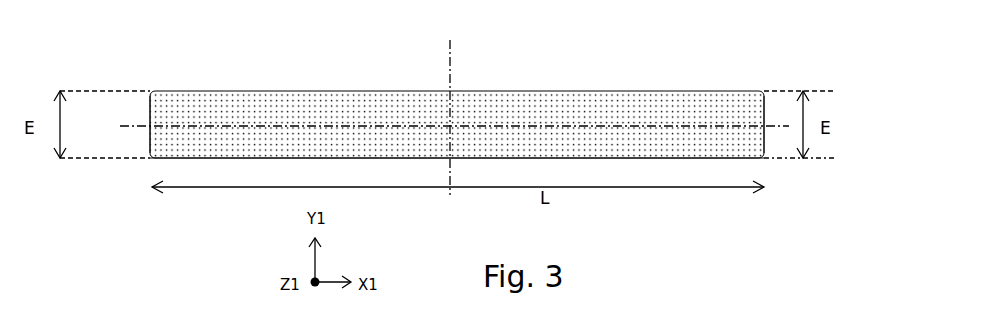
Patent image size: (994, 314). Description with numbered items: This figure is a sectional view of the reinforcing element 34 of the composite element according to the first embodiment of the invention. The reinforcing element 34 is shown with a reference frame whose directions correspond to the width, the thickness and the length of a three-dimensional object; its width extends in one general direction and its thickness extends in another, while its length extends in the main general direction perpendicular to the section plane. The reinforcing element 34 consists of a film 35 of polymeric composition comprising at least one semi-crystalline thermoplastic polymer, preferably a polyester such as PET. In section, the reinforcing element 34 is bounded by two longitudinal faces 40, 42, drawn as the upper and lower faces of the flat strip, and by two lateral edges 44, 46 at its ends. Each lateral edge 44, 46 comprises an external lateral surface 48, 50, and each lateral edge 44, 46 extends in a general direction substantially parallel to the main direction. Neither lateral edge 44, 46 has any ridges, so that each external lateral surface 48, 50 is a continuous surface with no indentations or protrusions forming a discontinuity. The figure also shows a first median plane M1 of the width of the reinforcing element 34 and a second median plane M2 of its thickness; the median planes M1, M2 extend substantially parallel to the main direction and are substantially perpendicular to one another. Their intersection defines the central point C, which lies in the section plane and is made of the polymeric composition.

The reinforcing element 34 is at (387, 74).
The film 35 is at (285, 126).
The longitudinal face 40 is at (591, 96).
The longitudinal face 42 is at (622, 160).
The lateral edge 44 is at (133, 102).
The lateral edge 46 is at (781, 102).
The external lateral surface 48 is at (150, 126).
The external lateral surface 50 is at (766, 131).
The first median plane M1 is at (452, 86).
The second median plane M2 is at (636, 126).
The central point C is at (450, 126).